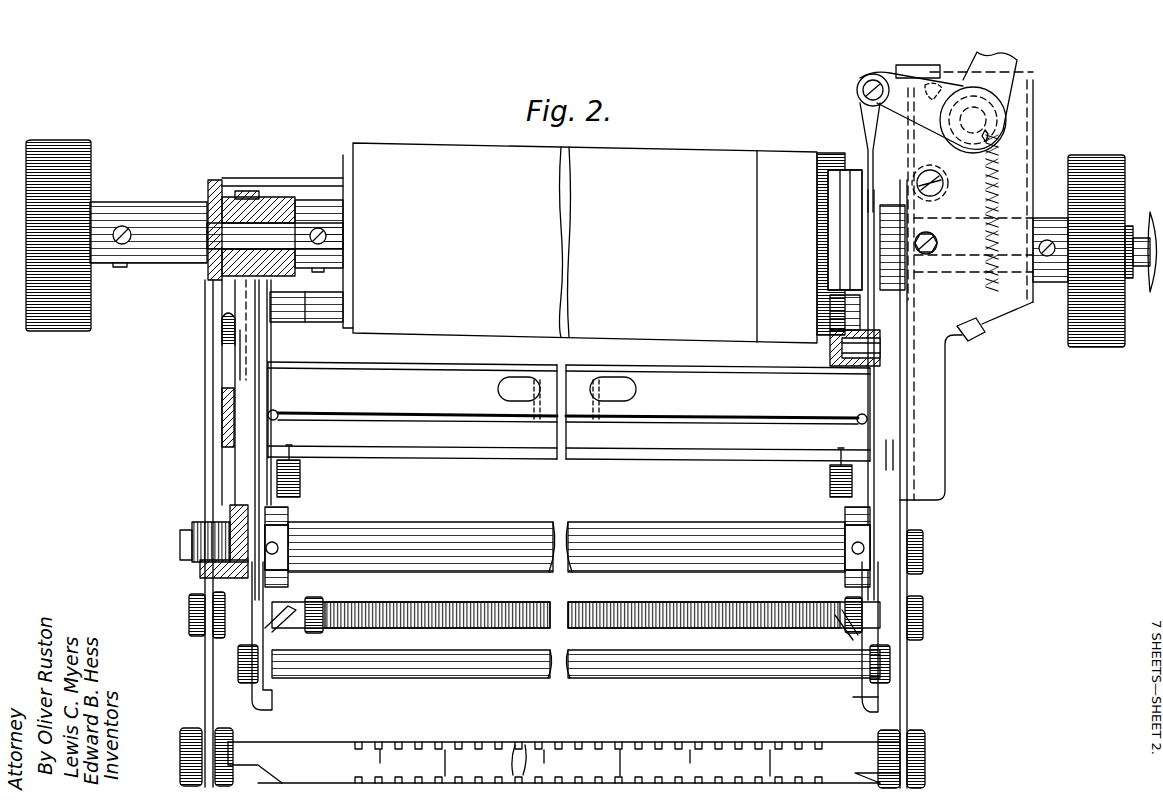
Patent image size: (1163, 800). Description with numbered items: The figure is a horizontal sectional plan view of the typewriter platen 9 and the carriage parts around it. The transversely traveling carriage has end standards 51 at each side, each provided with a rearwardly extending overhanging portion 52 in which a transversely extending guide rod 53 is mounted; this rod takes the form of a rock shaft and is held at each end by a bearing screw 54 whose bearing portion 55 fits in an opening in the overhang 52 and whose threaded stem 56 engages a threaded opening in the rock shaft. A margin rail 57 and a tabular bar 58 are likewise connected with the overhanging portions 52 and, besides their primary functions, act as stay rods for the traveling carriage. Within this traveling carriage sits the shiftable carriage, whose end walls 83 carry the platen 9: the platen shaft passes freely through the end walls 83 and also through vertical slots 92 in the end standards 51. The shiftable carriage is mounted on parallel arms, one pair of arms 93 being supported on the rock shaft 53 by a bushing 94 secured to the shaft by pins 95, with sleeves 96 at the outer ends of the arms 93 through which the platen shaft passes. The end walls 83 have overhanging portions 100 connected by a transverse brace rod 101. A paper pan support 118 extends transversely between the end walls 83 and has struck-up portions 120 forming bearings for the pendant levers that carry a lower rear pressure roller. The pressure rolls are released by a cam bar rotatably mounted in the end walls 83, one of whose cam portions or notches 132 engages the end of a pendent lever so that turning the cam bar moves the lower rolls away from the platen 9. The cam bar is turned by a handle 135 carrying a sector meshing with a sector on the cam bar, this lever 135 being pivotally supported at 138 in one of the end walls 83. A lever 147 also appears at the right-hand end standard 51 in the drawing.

The platen 9 is at (591, 155).
The end standards 51 is at (212, 340).
The overhanging portions 52 is at (205, 674).
The guide rod 53 is at (583, 526).
The bearing screw 54 is at (200, 556).
The bearing portion 55 is at (210, 540).
The threaded stem 56 is at (236, 510).
The margin rail 57 is at (580, 606).
The tabular bar 58 is at (536, 752).
The end walls 83 is at (258, 373).
The vertical slots 92 is at (212, 198).
The arms 93 is at (240, 410).
The bushing 94 is at (290, 514).
The pins 95 is at (278, 552).
The sleeves 96 is at (247, 192).
The overhanging portions 100 is at (256, 605).
The brace rod 101 is at (592, 672).
The paper pan support 118 is at (569, 411).
The struck-up portions 120 is at (612, 378).
The cam portion 132 is at (283, 316).
The handle 135 is at (240, 372).
The pivot 138 is at (226, 318).
The line-space lever 147 is at (878, 292).